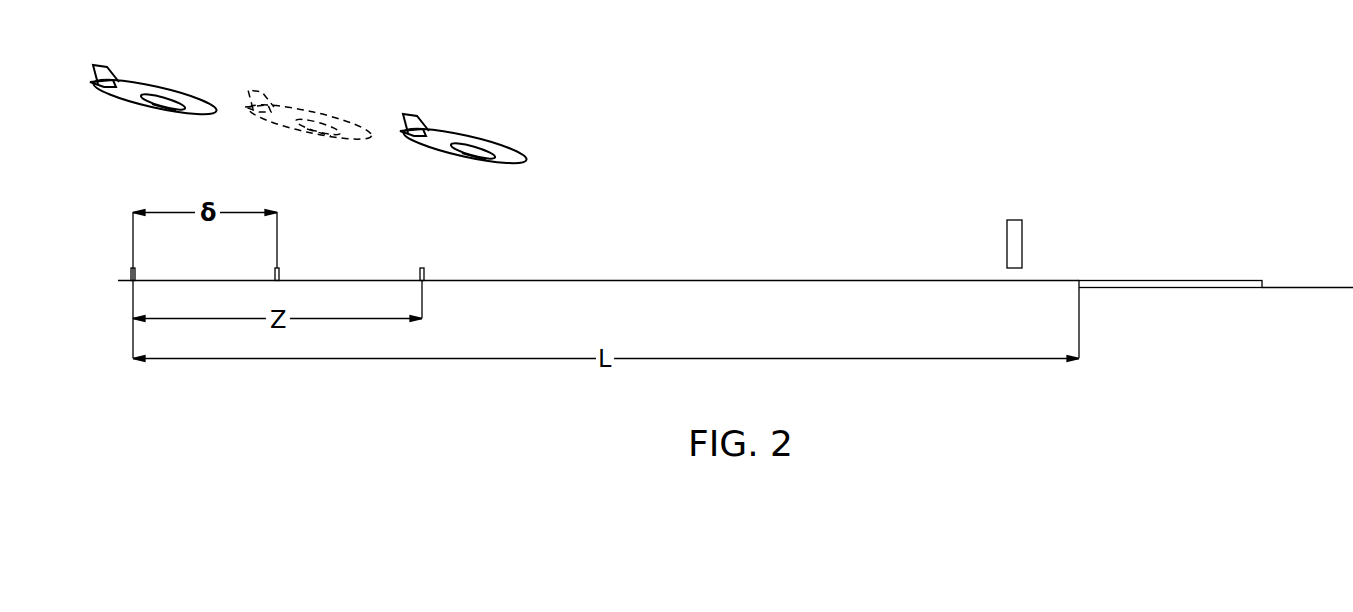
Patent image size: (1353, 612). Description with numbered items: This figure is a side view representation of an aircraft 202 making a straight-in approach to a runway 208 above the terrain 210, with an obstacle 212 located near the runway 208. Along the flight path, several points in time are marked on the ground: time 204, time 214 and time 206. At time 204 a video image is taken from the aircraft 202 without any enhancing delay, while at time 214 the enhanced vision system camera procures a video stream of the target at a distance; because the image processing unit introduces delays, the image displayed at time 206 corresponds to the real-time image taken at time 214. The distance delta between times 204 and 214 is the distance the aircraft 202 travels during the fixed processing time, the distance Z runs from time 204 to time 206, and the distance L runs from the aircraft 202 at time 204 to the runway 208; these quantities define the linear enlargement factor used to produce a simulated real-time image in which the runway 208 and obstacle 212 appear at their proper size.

The aircraft 202 is at (163, 87).
The time 204 is at (137, 273).
The time 214 is at (281, 273).
The time 206 is at (426, 273).
The runway 208 is at (1181, 280).
The terrain 210 is at (1313, 287).
The obstacle 212 is at (1023, 236).